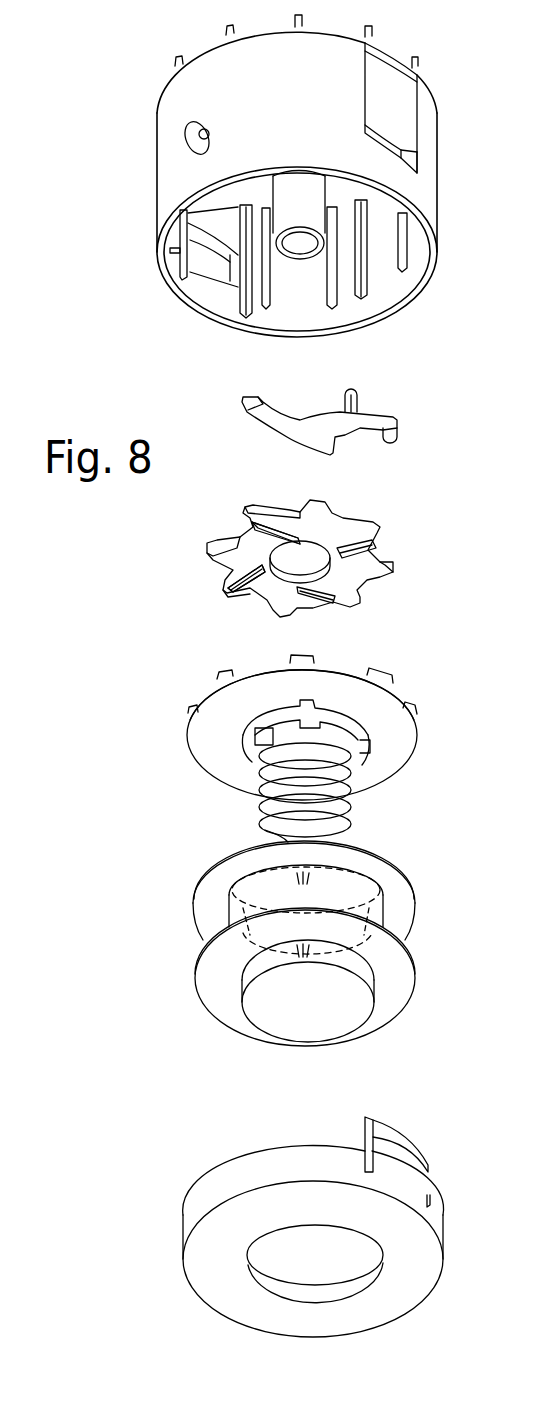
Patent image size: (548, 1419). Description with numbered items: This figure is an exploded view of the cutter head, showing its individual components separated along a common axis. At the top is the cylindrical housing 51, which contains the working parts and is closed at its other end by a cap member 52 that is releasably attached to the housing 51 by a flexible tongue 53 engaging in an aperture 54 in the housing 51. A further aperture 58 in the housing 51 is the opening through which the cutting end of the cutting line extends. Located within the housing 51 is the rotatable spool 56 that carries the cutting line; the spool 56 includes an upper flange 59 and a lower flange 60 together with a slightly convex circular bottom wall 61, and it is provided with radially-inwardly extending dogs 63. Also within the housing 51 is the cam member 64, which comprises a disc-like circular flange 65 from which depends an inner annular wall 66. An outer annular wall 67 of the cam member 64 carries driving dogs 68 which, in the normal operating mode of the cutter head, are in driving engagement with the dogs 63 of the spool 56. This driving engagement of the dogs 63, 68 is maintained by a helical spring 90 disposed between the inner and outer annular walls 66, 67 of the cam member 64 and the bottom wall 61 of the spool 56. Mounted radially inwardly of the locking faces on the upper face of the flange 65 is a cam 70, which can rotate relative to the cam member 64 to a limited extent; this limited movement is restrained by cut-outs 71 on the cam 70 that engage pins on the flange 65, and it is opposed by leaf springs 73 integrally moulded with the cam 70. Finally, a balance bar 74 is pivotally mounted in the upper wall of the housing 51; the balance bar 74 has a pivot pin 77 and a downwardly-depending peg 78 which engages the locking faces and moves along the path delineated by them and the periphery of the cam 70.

The cylindrical housing 51 is at (163, 145).
The cap member 52 is at (410, 1288).
The flexible tongue 53 is at (400, 1139).
The aperture 54 is at (413, 161).
The rotatable spool 56 is at (327, 943).
The aperture 58 is at (212, 134).
The upper flange 59 is at (402, 912).
The lower flange 60 is at (402, 977).
The bottom wall 61 is at (273, 1008).
The dogs 63 is at (262, 876).
The cam member 64 is at (310, 748).
The flange 65 is at (218, 712).
The inner annular wall 66 is at (327, 783).
The outer annular wall 67 is at (362, 752).
The driving dogs 68 is at (252, 741).
The cam 70 is at (407, 551).
The cut-outs 71 is at (300, 540).
The leaf springs 73 is at (240, 590).
The balance bar 74 is at (410, 410).
The pivot pin 77 is at (358, 399).
The peg 78 is at (398, 432).
The helical spring 90 is at (265, 830).